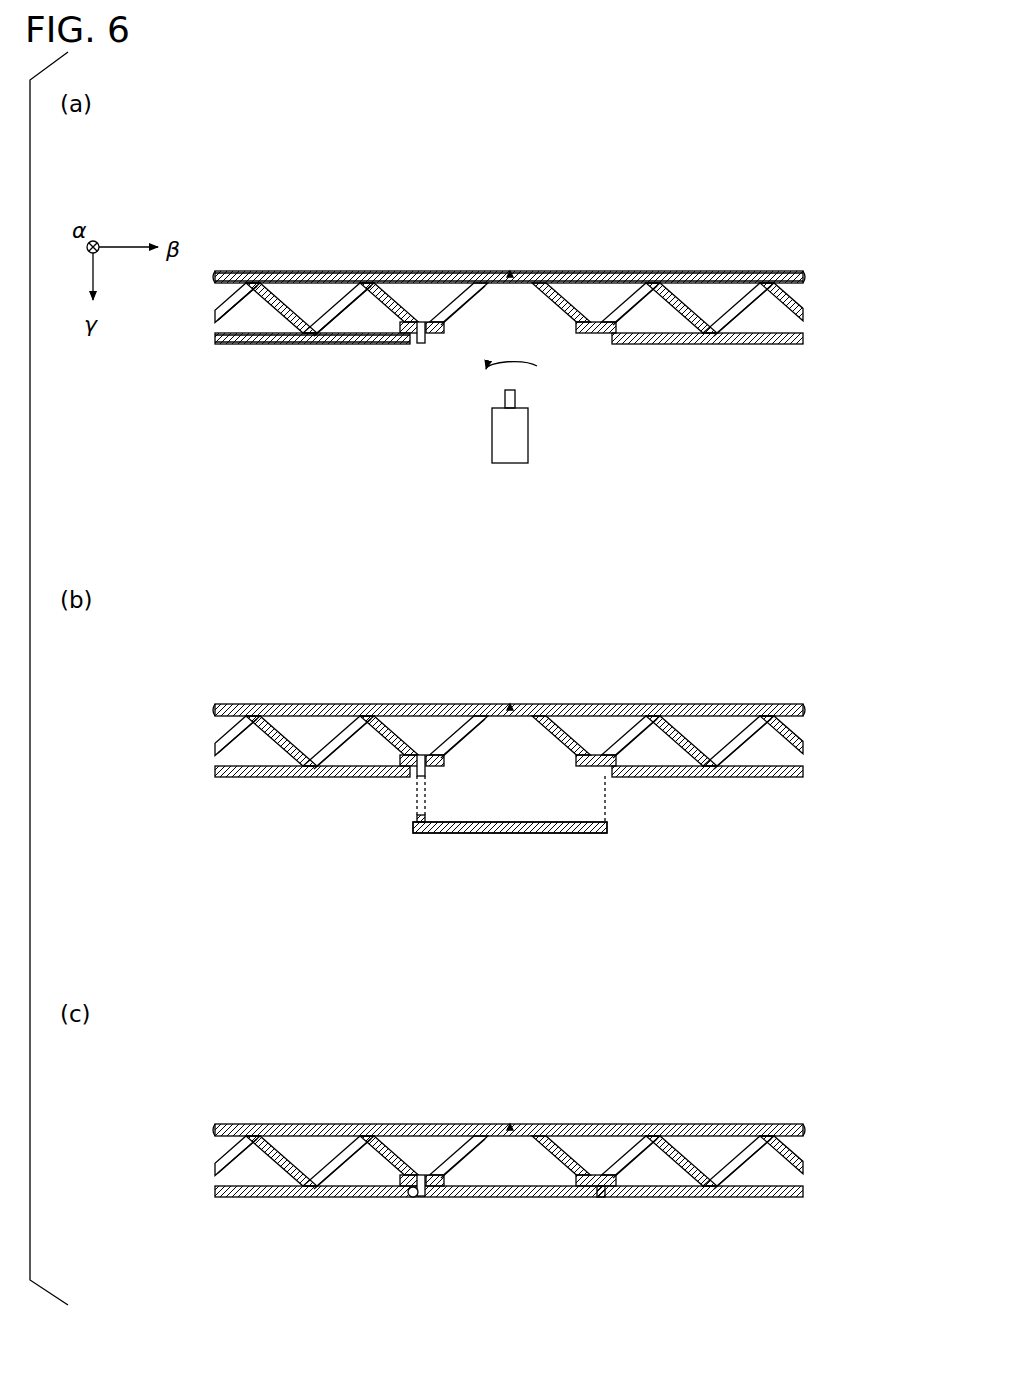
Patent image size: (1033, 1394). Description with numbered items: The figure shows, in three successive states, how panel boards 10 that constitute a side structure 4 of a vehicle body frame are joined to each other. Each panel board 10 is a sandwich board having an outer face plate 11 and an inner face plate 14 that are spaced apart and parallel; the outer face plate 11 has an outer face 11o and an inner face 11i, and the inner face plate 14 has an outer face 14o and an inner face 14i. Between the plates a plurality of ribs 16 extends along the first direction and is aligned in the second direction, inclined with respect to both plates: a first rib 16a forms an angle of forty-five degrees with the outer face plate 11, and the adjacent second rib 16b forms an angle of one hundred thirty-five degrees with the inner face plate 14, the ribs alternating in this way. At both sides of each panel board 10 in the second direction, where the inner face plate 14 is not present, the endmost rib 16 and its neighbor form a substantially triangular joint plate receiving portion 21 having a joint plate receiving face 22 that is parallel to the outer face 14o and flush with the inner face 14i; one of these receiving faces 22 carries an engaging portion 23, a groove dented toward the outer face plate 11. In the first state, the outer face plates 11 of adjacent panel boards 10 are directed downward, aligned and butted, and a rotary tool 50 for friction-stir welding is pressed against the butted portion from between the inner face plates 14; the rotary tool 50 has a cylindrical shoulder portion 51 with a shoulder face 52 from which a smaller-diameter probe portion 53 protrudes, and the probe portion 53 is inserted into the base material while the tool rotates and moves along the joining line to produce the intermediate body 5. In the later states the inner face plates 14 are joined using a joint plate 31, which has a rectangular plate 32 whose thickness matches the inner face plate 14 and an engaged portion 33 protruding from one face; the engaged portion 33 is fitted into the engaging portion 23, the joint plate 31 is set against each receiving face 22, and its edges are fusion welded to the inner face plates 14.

The side structure 4 is at (608, 1060).
The intermediate body 5 is at (608, 640).
The panel board 10 is at (235, 362).
The outer face plate 11 is at (292, 271).
The outer face of the outer face plate 11o is at (703, 280).
The inner face of the outer face plate 11i is at (730, 292).
The inner face plate 14 is at (255, 345).
The outer face of the inner face plate 14o is at (320, 345).
The inner face of the inner face plate 14i is at (360, 345).
The rib 16 is at (452, 292).
The first rib 16a is at (225, 290).
The second rib 16b is at (310, 300).
The joint plate receiving portion 21 is at (470, 436).
The joint plate receiving face 22 is at (412, 340).
The engaging portion 23 is at (425, 340).
The joint plate 31 is at (512, 893).
The rectangular plate 32 is at (500, 834).
The engaged portion 33 is at (415, 828).
The rotary tool 50 is at (580, 455).
The shoulder portion 51 is at (515, 455).
The shoulder face 52 is at (493, 396).
The probe portion 53 is at (517, 395).